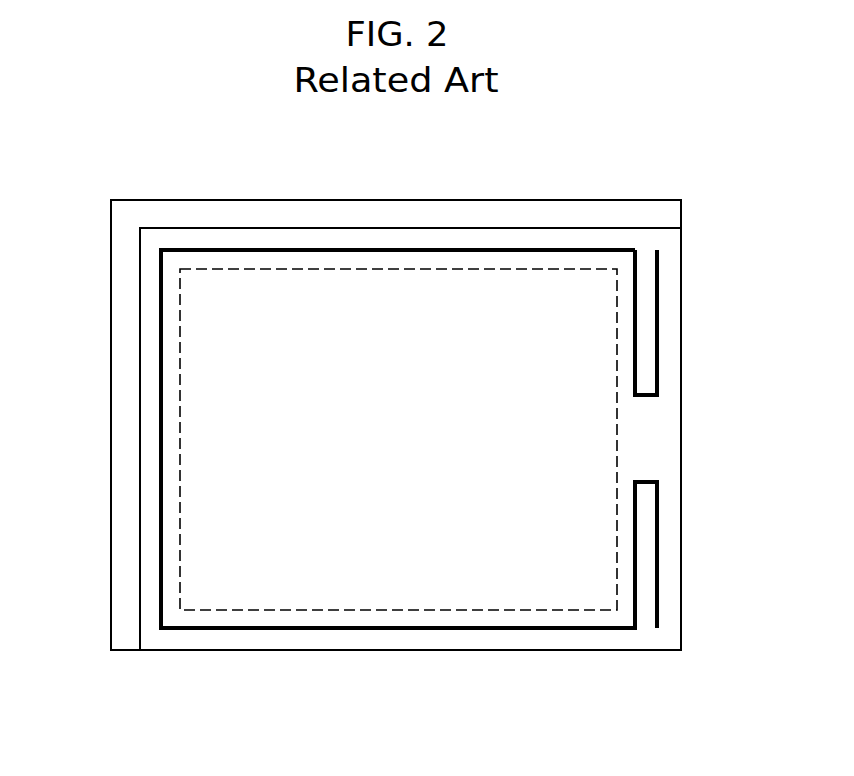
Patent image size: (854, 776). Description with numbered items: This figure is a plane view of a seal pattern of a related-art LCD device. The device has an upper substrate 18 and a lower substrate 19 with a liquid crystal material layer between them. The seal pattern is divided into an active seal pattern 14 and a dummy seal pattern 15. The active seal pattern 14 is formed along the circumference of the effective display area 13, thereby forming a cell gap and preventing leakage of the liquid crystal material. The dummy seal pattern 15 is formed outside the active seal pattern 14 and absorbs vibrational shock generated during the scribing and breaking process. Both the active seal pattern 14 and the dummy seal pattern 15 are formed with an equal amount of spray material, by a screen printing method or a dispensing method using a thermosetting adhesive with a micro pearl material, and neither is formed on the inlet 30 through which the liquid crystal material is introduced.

The effective display area 13 is at (180, 488).
The active seal pattern 14 is at (636, 577).
The dummy seal pattern 15 is at (655, 318).
The upper substrate 18 is at (150, 393).
The lower substrate 19 is at (118, 297).
The inlet 30 is at (648, 438).